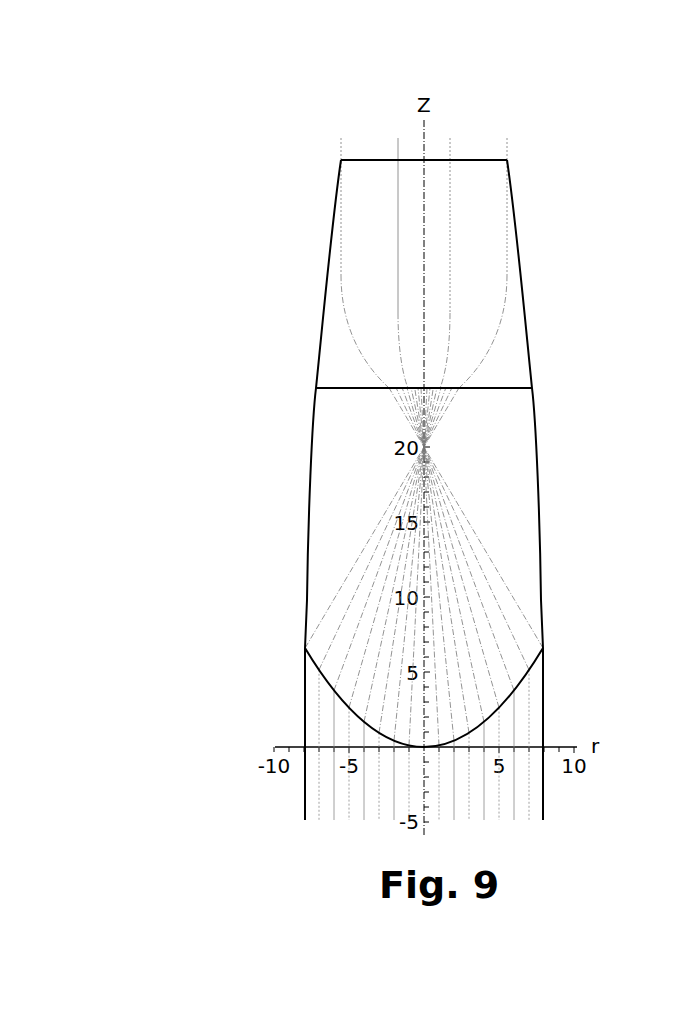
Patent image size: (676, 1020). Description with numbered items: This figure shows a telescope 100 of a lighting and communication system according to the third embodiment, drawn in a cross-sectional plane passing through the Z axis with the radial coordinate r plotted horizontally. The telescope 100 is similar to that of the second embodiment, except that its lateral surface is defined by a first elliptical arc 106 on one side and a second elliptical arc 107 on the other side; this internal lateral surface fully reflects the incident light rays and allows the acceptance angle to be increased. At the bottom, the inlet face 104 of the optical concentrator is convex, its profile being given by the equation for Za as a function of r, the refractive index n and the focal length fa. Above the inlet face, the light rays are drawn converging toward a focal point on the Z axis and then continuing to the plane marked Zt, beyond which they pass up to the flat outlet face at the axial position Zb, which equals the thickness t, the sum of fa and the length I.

The telescope 100 is at (258, 517).
The inlet face 104 is at (330, 685).
The first elliptical arc 106 is at (306, 583).
The second elliptical arc 107 is at (543, 583).
The inlet face surface equation Za is at (510, 705).
The axial position of transition plane Zt is at (538, 425).
The total thickness Zb is at (438, 178).